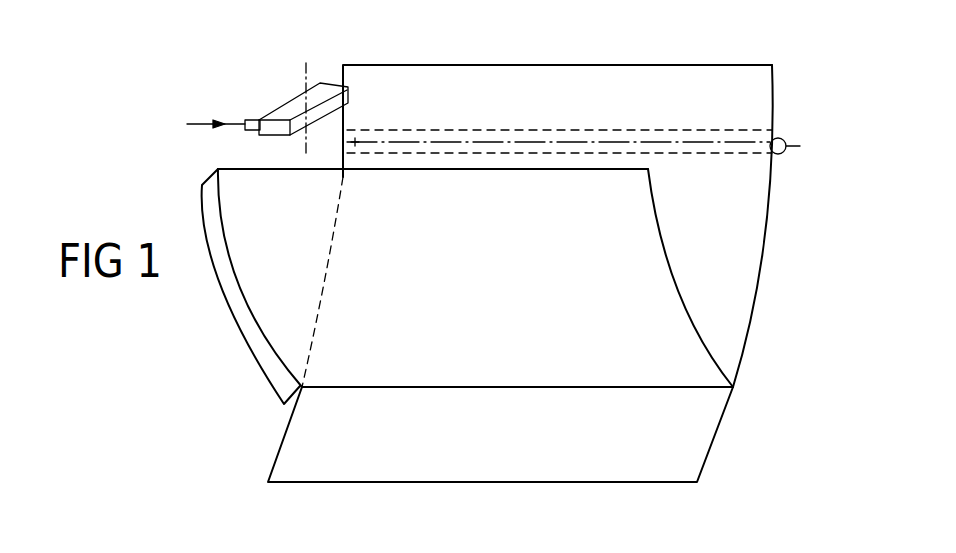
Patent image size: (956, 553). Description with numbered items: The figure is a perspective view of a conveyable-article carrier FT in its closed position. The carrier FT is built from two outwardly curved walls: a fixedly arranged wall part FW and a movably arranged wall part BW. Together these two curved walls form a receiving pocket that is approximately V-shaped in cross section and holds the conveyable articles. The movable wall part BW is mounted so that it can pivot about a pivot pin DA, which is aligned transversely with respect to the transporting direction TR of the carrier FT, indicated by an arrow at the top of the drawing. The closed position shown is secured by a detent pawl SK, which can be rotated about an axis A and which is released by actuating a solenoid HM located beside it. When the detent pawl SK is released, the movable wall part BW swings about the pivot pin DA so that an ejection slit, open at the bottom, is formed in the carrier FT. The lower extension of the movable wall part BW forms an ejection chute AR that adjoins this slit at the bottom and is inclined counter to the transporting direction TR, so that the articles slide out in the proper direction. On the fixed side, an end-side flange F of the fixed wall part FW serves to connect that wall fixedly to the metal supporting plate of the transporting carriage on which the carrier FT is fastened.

The transporting direction TR is at (630, 13).
The pivot pin DA is at (794, 142).
The movable wall part BW is at (735, 187).
The fixedly arranged wall part FW is at (642, 308).
The conveyable-article carrier FT is at (773, 287).
The ejection chute AR is at (680, 430).
The end-side flange F is at (247, 323).
The detent pawl SK is at (280, 112).
The axis A is at (305, 70).
The solenoid HM is at (194, 125).